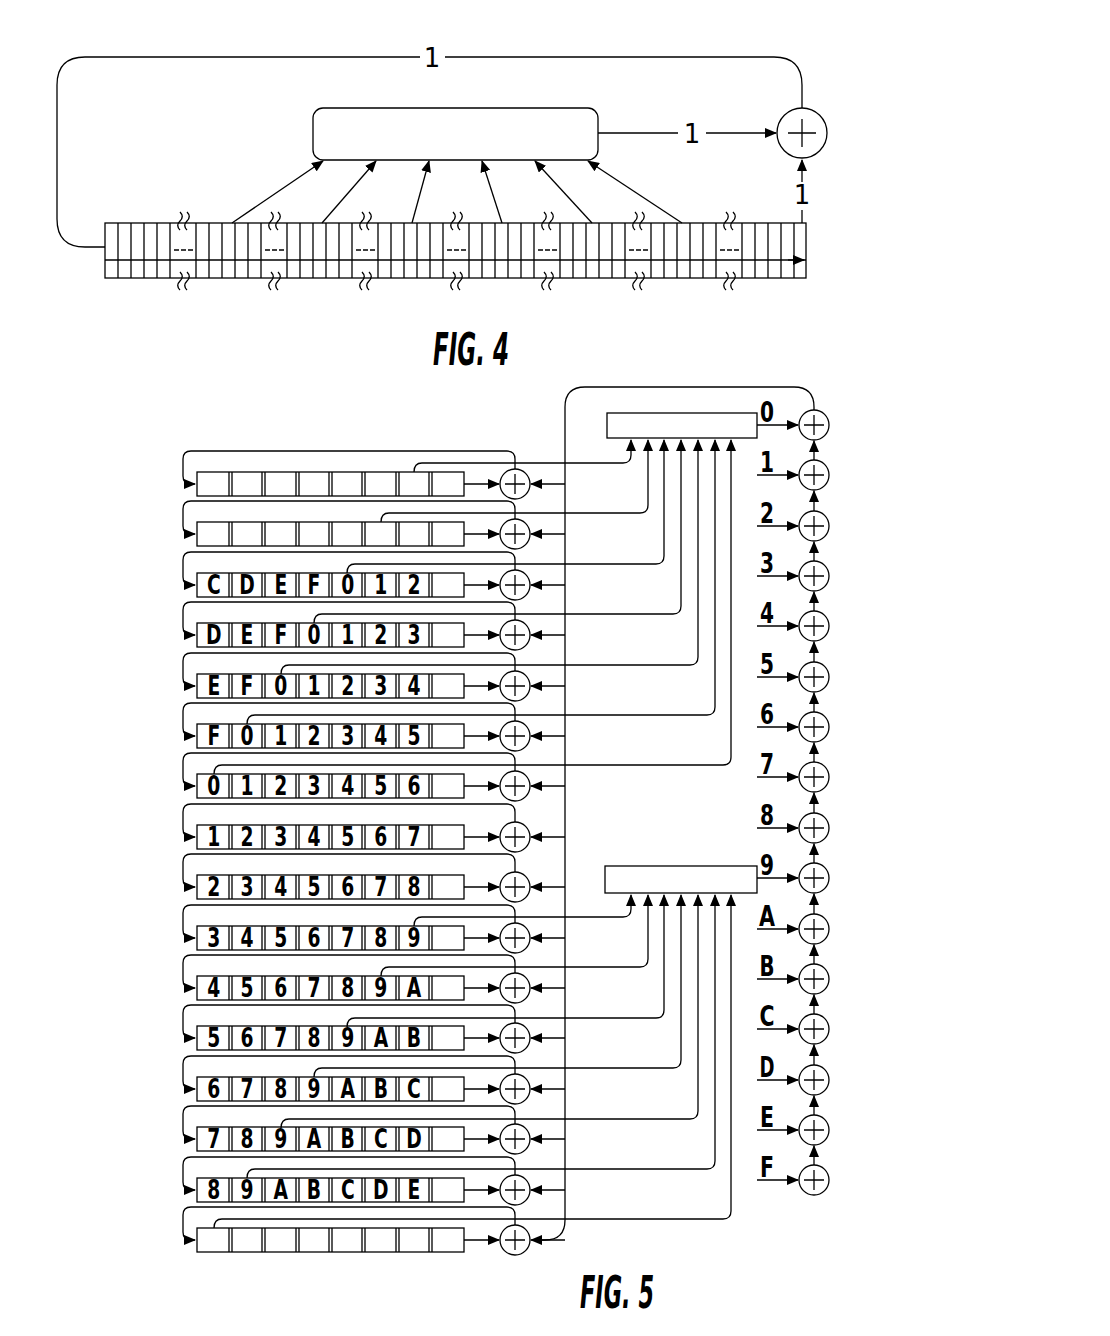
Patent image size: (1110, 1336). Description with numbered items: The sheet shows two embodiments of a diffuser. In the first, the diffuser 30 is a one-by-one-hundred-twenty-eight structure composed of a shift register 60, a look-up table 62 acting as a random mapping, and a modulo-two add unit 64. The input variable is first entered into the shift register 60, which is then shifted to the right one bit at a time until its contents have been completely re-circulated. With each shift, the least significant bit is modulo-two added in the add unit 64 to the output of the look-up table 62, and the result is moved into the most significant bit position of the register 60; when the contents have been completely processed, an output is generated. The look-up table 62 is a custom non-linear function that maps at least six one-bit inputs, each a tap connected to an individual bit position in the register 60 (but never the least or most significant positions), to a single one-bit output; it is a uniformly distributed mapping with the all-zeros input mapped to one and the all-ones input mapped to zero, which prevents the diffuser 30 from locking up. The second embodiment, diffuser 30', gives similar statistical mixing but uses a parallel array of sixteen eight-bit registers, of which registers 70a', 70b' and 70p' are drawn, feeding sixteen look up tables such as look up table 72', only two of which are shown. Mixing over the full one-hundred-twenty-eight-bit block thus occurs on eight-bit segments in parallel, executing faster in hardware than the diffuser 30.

In FIG. 4, the diffuser 30 is at (711, 19).
In FIG. 4, the shift register 60 is at (808, 256).
In FIG. 4, the look-up table 62 is at (313, 118).
In FIG. 4, the modulo-two add unit 64 is at (821, 116).
In FIG. 5, the diffuser 30' is at (875, 445).
In FIG. 5, the register 70a' is at (372, 458).
In FIG. 5, the register 70b' is at (375, 494).
In FIG. 5, the register 70p' is at (456, 1107).
In FIG. 5, the look up table 72' is at (699, 610).